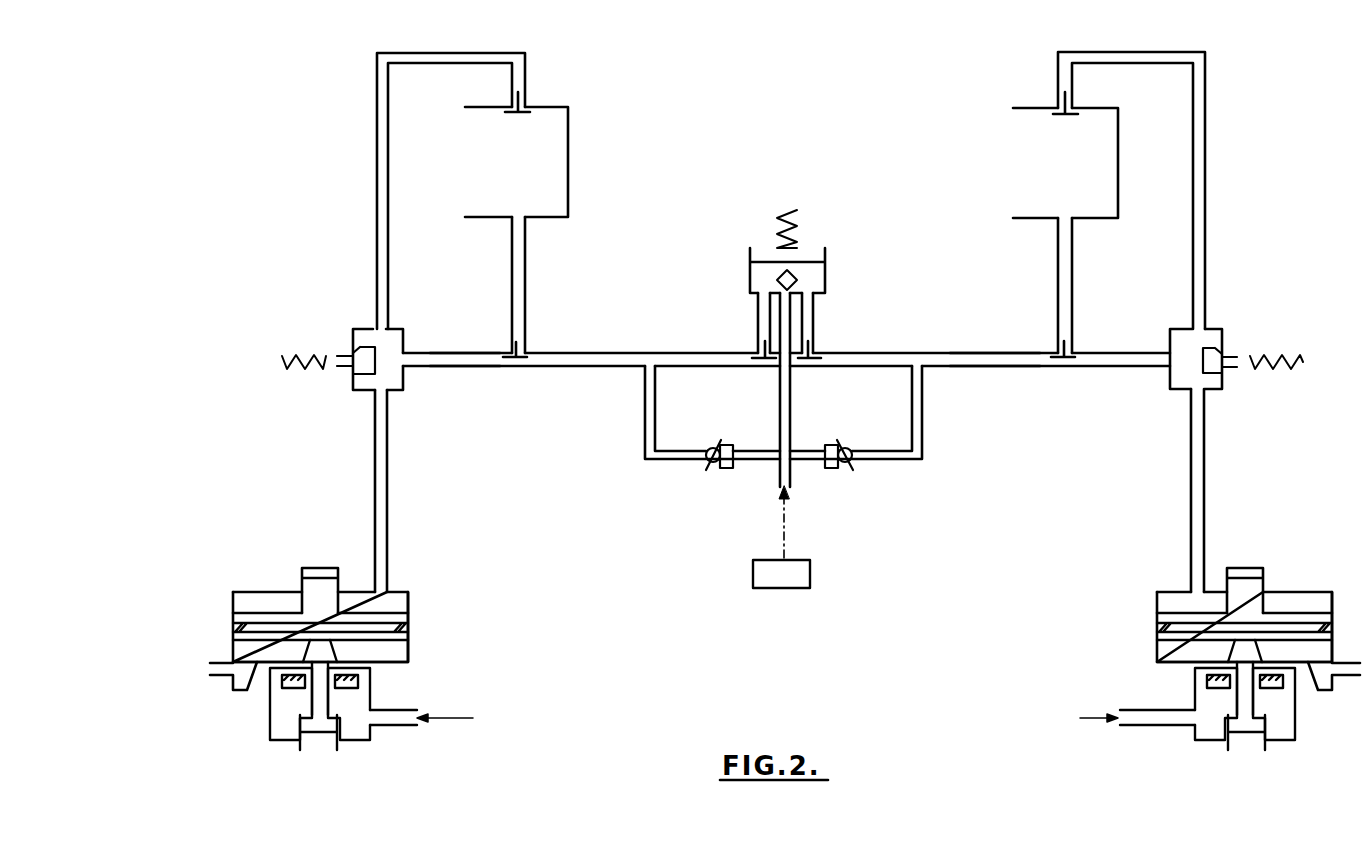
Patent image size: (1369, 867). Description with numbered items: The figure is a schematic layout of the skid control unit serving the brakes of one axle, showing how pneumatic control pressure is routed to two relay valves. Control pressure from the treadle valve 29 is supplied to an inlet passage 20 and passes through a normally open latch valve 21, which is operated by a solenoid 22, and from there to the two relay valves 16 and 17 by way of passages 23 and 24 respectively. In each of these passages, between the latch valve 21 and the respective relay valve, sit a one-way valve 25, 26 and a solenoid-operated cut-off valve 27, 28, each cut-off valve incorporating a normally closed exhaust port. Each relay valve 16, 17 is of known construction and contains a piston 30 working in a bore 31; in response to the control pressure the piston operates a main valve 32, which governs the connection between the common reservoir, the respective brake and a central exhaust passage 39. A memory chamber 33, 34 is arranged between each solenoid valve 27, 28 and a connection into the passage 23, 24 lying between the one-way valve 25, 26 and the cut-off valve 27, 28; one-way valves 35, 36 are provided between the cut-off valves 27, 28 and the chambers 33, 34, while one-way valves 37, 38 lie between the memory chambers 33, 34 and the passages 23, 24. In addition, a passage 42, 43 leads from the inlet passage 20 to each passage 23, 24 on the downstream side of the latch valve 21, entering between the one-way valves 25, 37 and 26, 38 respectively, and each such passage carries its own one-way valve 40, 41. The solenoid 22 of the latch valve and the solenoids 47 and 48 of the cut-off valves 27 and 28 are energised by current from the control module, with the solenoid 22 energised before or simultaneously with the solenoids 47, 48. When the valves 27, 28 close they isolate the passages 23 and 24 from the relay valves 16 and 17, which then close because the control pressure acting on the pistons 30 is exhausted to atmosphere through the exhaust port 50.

The relay valve 16 is at (771, 588).
The relay valve 17 is at (1151, 641).
The inlet passage 20 is at (786, 489).
The latch valve 21 is at (777, 283).
The solenoid 22 is at (778, 226).
The passage 23 is at (571, 358).
The passage 24 is at (1018, 358).
The one-way valve 25 is at (763, 347).
The one-way valve 26 is at (810, 347).
The solenoid-operated cut-off valve 27 is at (364, 358).
The solenoid-operated cut-off valve 28 is at (1212, 365).
The treadle valve 29 is at (797, 578).
The piston 30 is at (374, 630).
The bore 31 is at (408, 660).
The main valve 32 is at (324, 732).
The memory chamber 33 is at (489, 176).
The memory chamber 34 is at (1042, 176).
The one-way valve 35 is at (526, 104).
The one-way valve 36 is at (1070, 108).
The one-way valve 37 is at (521, 356).
The one-way valve 38 is at (1058, 352).
The central exhaust passage 39 is at (318, 718).
The one-way valve 40 is at (713, 463).
The one-way valve 41 is at (850, 463).
The passage 42 is at (650, 432).
The passage 43 is at (918, 423).
The solenoid 47 is at (311, 373).
The solenoid 48 is at (1253, 361).
The exhaust port 50 is at (343, 352).